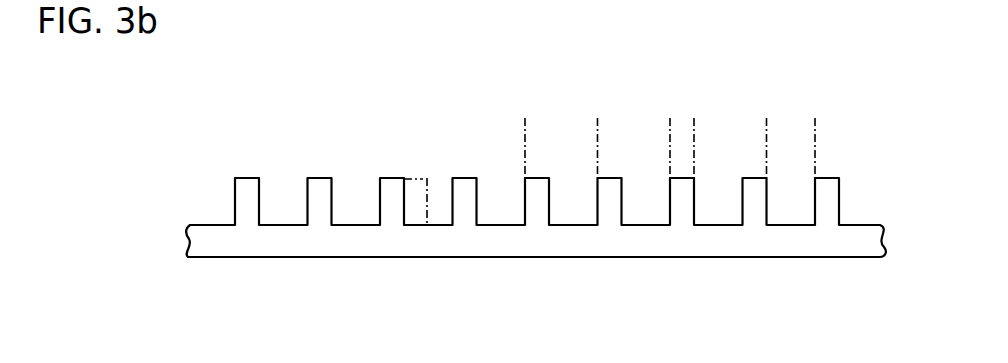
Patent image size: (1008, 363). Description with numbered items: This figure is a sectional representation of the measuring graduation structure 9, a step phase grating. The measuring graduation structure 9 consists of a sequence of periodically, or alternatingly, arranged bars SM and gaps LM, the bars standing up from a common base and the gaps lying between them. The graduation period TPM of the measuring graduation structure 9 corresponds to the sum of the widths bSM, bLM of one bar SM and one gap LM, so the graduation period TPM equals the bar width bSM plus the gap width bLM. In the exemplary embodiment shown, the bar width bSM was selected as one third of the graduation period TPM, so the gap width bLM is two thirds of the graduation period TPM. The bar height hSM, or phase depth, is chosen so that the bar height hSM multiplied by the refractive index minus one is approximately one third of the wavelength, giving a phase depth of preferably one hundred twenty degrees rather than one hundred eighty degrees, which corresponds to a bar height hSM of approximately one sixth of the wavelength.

The measuring graduation structure 9 is at (170, 245).
The bar SM is at (247, 192).
The gap LM is at (285, 192).
The bar height hSM is at (425, 199).
The graduation period TPM is at (598, 126).
The bar width bSM is at (722, 126).
The gap width bLM is at (815, 126).